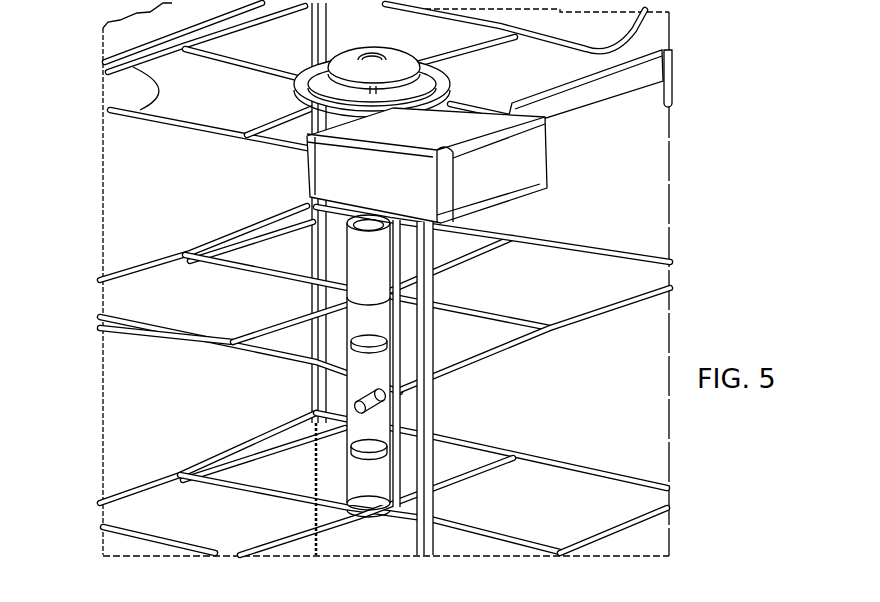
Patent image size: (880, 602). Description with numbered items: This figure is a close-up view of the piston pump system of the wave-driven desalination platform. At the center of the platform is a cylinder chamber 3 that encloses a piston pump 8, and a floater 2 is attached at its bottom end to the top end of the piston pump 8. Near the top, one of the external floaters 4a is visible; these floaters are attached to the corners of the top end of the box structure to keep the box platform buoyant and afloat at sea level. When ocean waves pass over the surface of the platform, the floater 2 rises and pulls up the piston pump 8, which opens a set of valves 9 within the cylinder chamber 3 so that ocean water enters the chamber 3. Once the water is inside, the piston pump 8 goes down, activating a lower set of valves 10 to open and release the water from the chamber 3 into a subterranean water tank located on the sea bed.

The floater 2 is at (320, 71).
The external floater 4a is at (306, 172).
The piston pump 8 is at (358, 271).
The cylinder chamber 3 is at (340, 341).
The set of valves 9 is at (350, 402).
The lower set of valves 10 is at (350, 447).